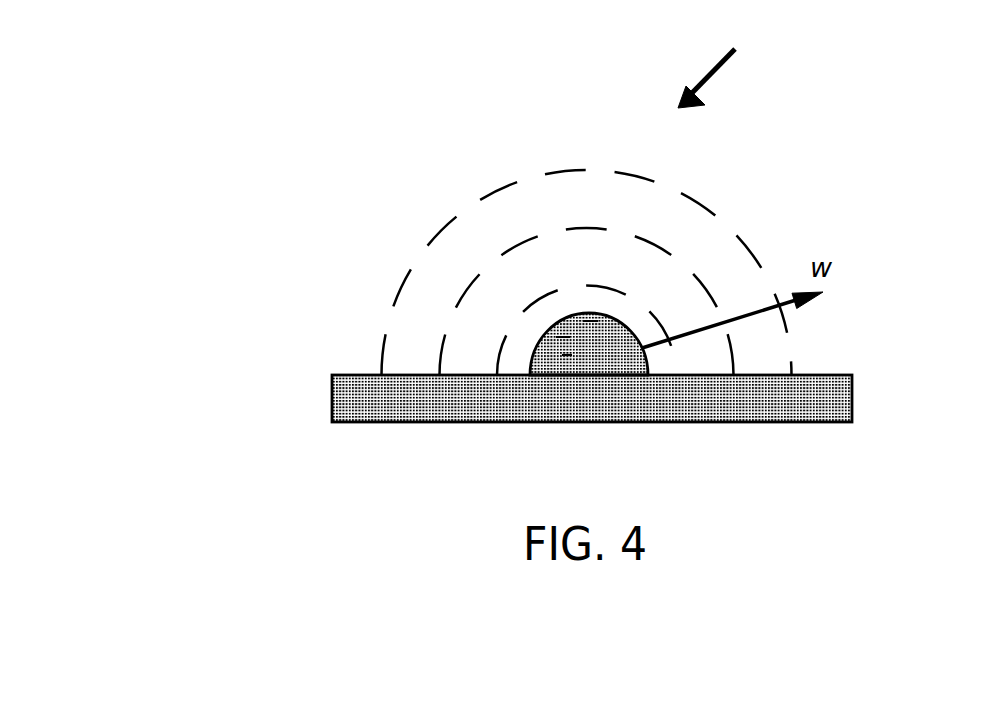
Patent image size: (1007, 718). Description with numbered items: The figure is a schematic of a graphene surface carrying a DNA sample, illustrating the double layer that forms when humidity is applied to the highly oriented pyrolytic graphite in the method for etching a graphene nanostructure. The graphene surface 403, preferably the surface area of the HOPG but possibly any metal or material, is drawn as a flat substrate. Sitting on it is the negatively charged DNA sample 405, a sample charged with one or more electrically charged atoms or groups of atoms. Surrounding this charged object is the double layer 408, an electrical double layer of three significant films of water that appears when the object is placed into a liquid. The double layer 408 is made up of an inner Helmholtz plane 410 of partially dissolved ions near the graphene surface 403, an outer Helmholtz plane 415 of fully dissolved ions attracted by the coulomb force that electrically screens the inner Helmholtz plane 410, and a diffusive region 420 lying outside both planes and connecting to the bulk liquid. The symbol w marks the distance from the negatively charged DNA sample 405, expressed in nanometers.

The graphene surface 403 is at (331, 377).
The negatively charged DNA sample 405 is at (533, 348).
The double layer 408 is at (741, 58).
The inner Helmholtz plane 410 is at (530, 298).
The outer Helmholtz plane 415 is at (547, 230).
The diffusive region 420 is at (707, 202).